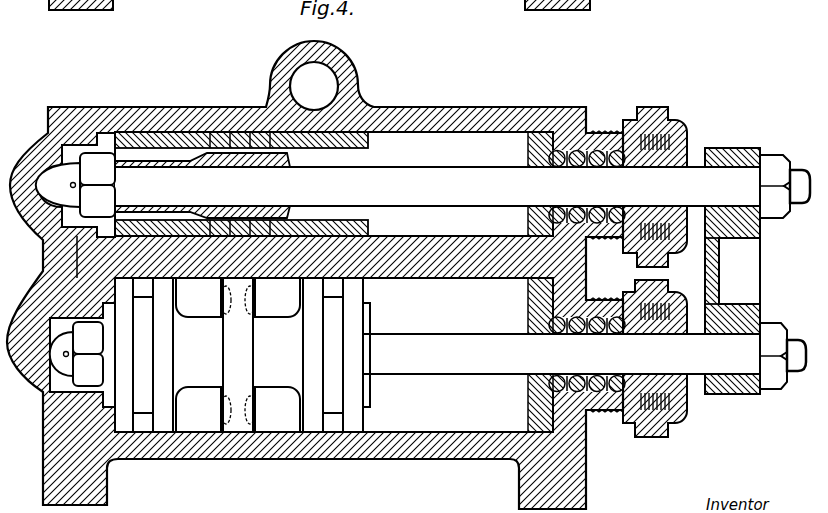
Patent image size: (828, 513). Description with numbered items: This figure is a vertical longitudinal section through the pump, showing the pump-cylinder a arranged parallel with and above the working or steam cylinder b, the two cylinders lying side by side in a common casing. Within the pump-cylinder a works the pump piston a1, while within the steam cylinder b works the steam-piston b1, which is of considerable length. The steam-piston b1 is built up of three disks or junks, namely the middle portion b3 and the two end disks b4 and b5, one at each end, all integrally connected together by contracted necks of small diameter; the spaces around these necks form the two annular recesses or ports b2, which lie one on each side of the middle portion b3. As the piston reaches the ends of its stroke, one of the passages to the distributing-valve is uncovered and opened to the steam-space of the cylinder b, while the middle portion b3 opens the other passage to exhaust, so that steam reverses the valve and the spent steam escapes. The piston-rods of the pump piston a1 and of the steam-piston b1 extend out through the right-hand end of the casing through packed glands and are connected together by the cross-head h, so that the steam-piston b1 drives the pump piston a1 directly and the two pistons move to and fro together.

The pump-cylinder a is at (334, 184).
The pump piston a1 is at (153, 136).
The working or steam cylinder b is at (334, 355).
The steam-piston b1 is at (198, 355).
The annular recesses or ports b2 is at (238, 355).
The middle portion of the piston b3 is at (238, 355).
The end disk of the piston b4 is at (114, 434).
The end disk of the piston b5 is at (351, 433).
The cross-head h is at (732, 271).